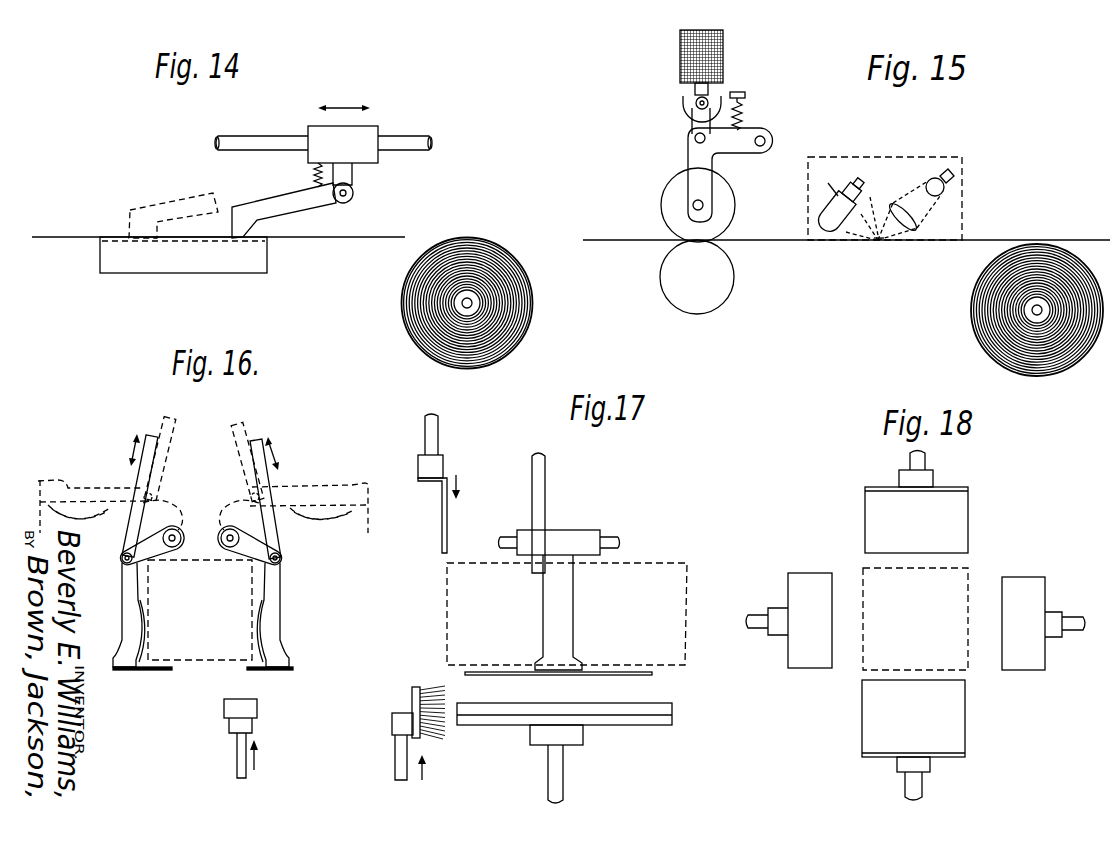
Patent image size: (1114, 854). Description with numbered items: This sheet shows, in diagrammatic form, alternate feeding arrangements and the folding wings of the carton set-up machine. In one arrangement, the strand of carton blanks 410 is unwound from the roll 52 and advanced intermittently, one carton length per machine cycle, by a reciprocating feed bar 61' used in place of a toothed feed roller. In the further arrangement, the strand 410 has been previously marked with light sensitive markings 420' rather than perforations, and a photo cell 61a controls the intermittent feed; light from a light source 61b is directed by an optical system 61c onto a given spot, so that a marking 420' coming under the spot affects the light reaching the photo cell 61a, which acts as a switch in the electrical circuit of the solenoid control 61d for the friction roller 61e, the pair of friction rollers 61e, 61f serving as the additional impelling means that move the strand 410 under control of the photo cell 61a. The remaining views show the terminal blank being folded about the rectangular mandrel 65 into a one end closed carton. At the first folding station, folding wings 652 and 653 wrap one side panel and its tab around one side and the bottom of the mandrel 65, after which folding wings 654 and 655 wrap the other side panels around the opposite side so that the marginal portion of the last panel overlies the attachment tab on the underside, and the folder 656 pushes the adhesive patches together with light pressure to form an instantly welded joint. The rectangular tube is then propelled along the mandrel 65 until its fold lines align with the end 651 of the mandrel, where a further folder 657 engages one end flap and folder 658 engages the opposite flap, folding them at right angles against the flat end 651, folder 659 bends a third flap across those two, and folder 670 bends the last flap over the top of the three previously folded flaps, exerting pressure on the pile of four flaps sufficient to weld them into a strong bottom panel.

In FIG. 14, the strand of carton blanks 410 is at (47, 237).
In FIG. 15, the strand of carton blanks 410 is at (612, 243).
In FIG. 14, the roll 52 is at (404, 303).
In FIG. 15, the roll 52 is at (1083, 267).
In FIG. 14, the reciprocating feed bar 61' is at (248, 210).
In FIG. 15, the photo cell 61a is at (846, 198).
In FIG. 15, the light source 61b is at (947, 183).
In FIG. 15, the optical system 61c is at (917, 220).
In FIG. 15, the solenoid control 61d is at (722, 55).
In FIG. 15, the friction roller 61e is at (731, 200).
In FIG. 15, the friction roller 61f is at (720, 283).
In FIG. 15, the light sensitive markings 420' is at (882, 263).
In FIG. 17, the rectangular mandrel 65 is at (643, 568).
In FIG. 16, the end of the mandrel 651 is at (197, 658).
In FIG. 17, the end of the mandrel 651 is at (447, 610).
In FIG. 18, the end of the mandrel 651 is at (963, 582).
In FIG. 16, the folding wing 652 is at (278, 592).
In FIG. 17, the folding wing 652 is at (568, 615).
In FIG. 16, the folding wing 653 is at (255, 672).
In FIG. 16, the folding wing 654 is at (123, 590).
In FIG. 16, the folding wing 655 is at (149, 670).
In FIG. 16, the folder 656 is at (258, 720).
In FIG. 17, the folder 656 is at (672, 717).
In FIG. 18, the folder 657 is at (805, 662).
In FIG. 18, the folder 658 is at (1023, 662).
In FIG. 17, the folder 659 is at (447, 512).
In FIG. 18, the folder 659 is at (960, 502).
In FIG. 17, the folder 670 is at (412, 688).
In FIG. 18, the folder 670 is at (958, 740).